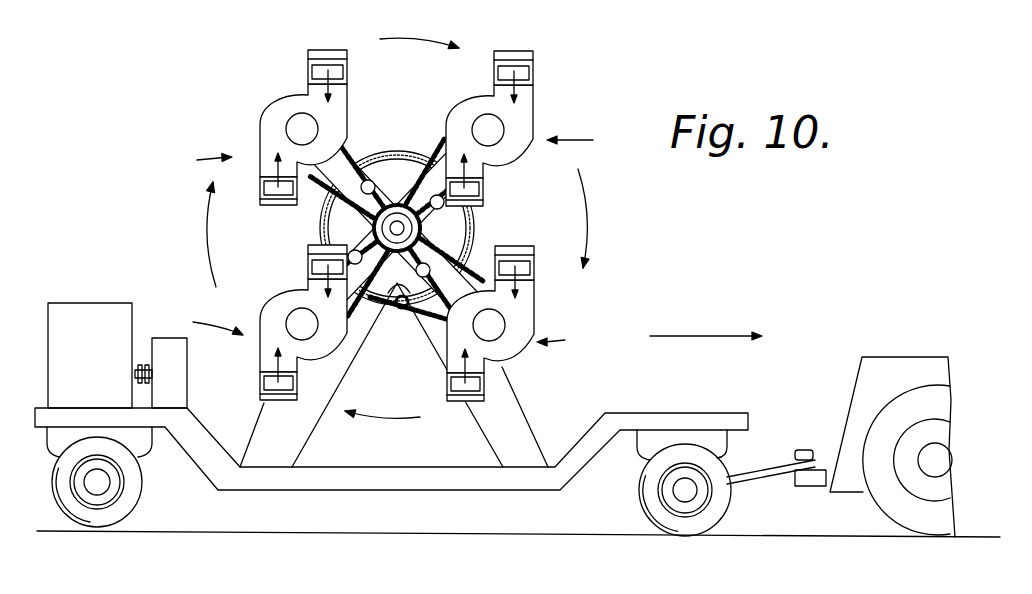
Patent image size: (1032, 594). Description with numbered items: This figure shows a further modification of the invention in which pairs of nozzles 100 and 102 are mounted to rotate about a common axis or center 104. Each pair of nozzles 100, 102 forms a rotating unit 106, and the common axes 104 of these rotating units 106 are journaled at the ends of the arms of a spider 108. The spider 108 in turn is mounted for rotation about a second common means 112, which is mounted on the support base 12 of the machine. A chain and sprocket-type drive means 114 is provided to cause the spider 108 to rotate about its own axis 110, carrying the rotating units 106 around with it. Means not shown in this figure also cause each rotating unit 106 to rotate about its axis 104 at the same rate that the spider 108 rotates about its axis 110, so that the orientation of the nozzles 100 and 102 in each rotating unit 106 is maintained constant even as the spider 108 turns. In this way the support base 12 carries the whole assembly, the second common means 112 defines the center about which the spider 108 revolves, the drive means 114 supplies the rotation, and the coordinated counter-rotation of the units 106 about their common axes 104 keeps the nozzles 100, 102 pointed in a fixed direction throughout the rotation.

The support base 12 is at (372, 485).
The nozzle 100 is at (312, 54).
The nozzle 102 is at (484, 192).
The common axis or center 104 is at (287, 126).
The rotating unit 106 is at (393, 242).
The spider 108 is at (357, 152).
The axis of the spider 110 is at (400, 228).
The second common means 112 is at (298, 437).
The chain and sprocket-type drive means 114 is at (400, 318).